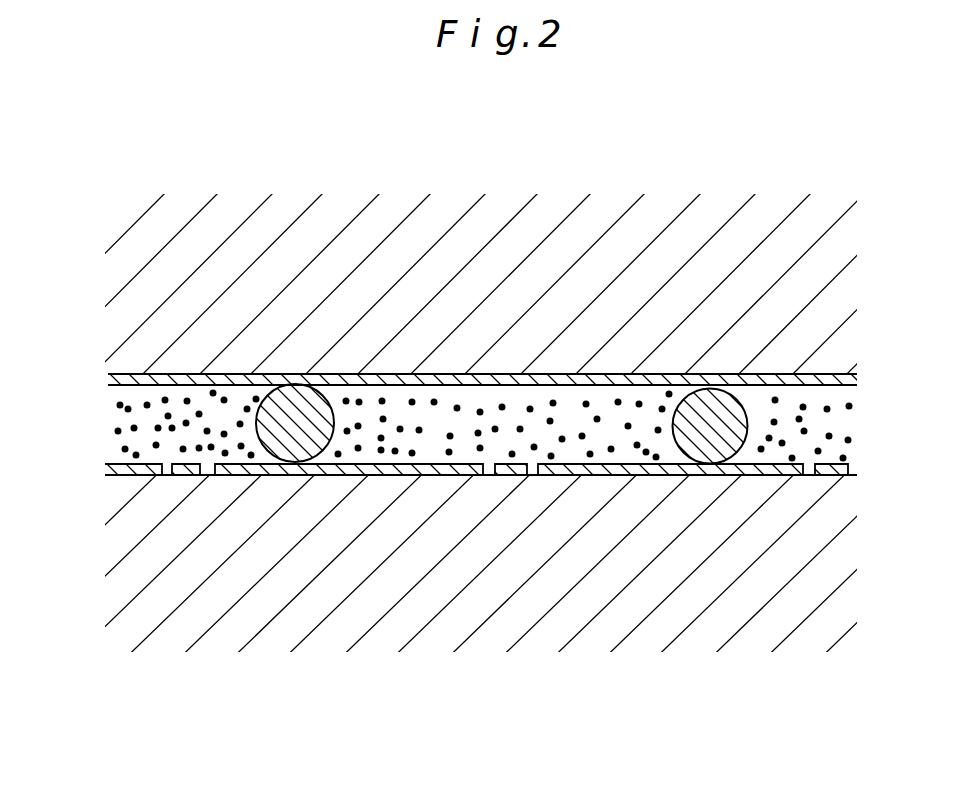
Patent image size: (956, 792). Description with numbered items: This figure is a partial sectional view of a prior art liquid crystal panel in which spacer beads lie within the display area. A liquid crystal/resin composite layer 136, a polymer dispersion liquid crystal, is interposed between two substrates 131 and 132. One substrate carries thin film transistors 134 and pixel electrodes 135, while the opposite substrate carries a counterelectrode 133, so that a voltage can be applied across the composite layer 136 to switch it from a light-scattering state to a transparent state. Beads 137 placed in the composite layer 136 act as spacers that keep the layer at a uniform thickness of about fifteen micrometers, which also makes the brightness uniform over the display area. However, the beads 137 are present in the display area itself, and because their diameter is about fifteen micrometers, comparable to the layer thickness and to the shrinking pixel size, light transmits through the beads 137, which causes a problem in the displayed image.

The substrate 131 is at (458, 620).
The substrate 132 is at (833, 312).
The counterelectrode 133 is at (803, 380).
The thin film transistors 134 is at (510, 475).
The pixel electrodes 135 is at (355, 475).
The liquid crystal/resin composite layer 136 is at (103, 387).
The beads 137 is at (295, 402).